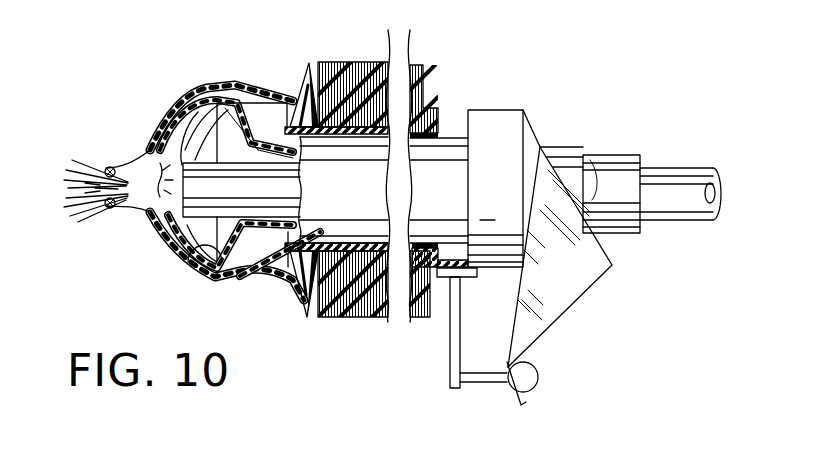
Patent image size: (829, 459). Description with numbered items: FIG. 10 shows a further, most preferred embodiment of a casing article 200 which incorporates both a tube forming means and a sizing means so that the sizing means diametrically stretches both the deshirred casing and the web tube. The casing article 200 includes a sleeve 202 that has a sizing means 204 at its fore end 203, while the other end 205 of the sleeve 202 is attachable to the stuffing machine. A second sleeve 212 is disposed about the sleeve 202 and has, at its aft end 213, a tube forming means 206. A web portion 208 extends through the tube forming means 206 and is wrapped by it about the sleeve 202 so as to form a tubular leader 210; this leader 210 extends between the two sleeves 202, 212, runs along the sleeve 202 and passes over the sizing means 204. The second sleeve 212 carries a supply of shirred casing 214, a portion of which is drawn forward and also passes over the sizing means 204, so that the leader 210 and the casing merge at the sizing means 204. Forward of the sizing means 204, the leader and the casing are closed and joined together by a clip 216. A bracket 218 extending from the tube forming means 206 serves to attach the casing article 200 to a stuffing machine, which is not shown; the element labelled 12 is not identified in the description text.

The casing article 200 is at (272, 58).
The sleeve 202 is at (327, 162).
The fore end 203 is at (253, 232).
The sizing means 204 is at (185, 259).
The other end 205 is at (615, 155).
The tube forming means 206 is at (517, 130).
The web portion 208 is at (592, 290).
The tubular leader 210 is at (455, 140).
The second sleeve 212 is at (302, 100).
The aft end 213 is at (430, 272).
The shirred casing 214 is at (412, 63).
The clip 216 is at (109, 167).
The bracket 218 is at (449, 347).
The hose 12 is at (667, 170).